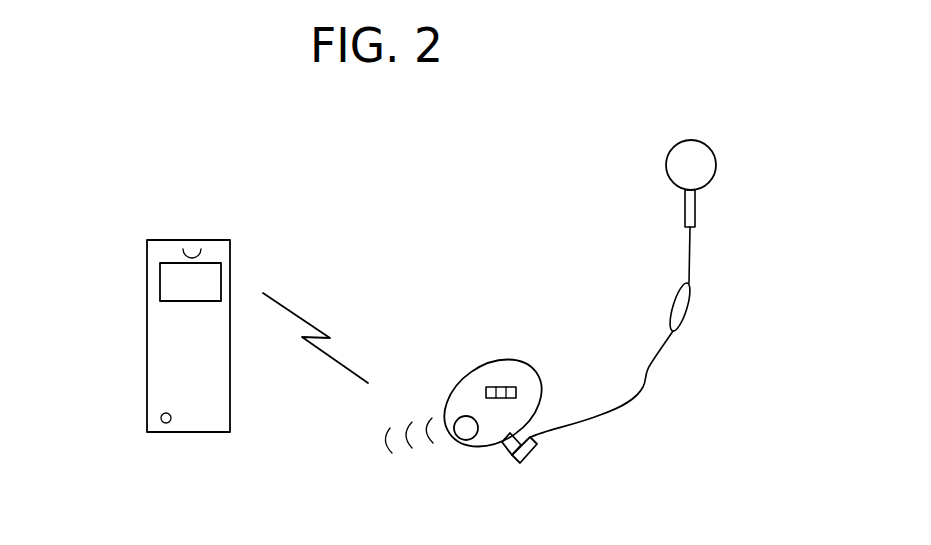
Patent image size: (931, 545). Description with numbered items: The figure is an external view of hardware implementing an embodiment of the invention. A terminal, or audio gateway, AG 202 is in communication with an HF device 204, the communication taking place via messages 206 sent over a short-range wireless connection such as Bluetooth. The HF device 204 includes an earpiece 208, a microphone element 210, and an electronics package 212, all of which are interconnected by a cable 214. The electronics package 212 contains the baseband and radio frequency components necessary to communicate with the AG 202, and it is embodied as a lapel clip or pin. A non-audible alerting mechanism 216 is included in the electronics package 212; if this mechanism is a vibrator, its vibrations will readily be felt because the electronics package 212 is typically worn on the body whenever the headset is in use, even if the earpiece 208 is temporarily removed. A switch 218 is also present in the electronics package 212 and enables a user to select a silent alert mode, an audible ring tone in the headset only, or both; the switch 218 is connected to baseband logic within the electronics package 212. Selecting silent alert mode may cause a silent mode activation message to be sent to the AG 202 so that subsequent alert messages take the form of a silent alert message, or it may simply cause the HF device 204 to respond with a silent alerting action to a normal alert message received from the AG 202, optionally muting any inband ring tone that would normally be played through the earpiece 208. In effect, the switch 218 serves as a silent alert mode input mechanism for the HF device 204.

The terminal or audio gateway (AG) 202 is at (155, 323).
The HF device 204 is at (555, 206).
The messages 206 is at (292, 308).
The earpiece 208 is at (697, 142).
The microphone element 210 is at (692, 300).
The electronics package 212 is at (515, 362).
The cable 214 is at (643, 387).
The non-audible alerting mechanism 216 is at (459, 432).
The switch 218 is at (490, 385).